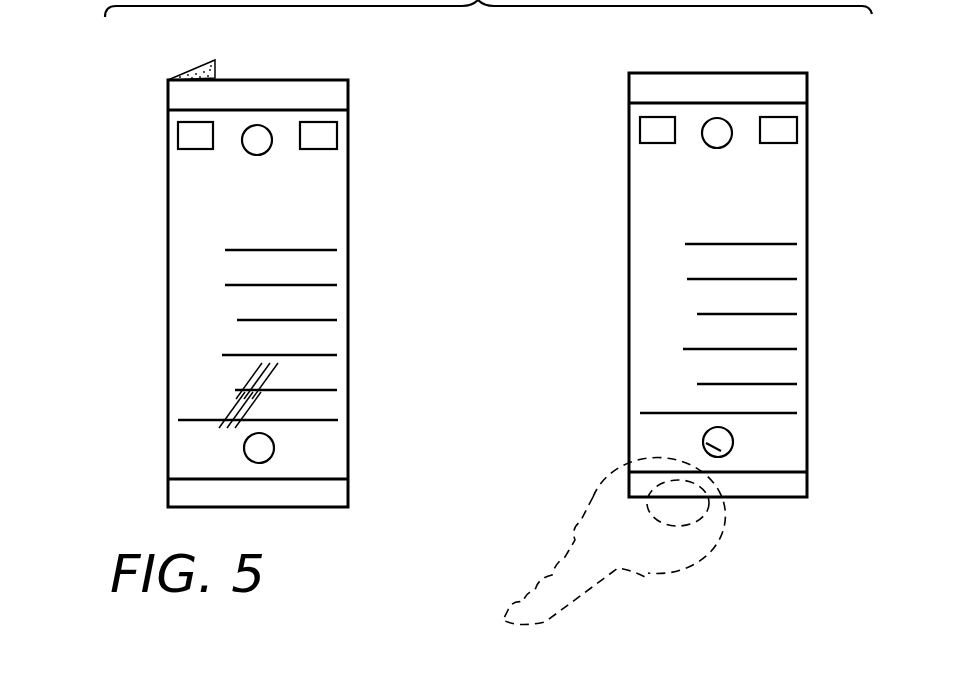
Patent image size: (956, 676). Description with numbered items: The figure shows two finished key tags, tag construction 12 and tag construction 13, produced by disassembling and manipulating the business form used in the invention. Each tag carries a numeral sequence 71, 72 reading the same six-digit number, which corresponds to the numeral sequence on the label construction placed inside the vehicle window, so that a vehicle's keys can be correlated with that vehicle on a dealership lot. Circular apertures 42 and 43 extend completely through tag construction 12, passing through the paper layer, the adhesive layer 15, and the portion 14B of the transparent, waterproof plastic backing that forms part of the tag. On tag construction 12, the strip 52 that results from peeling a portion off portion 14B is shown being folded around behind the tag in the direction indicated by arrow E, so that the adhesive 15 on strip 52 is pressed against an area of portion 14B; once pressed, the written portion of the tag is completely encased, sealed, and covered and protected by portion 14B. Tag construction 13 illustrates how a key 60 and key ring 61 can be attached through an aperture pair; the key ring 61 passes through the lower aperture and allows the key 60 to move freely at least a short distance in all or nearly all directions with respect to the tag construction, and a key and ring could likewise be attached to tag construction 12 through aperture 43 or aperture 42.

The tag construction 12 is at (374, 183).
The tag construction 13 is at (832, 200).
The portion of backing 14B is at (337, 234).
The adhesive layer 15 is at (198, 78).
The aperture 42 is at (257, 194).
The aperture 43 is at (270, 437).
The strip 52 is at (200, 76).
The key 60 is at (590, 499).
The key ring 61 is at (729, 505).
The numeral sequence 71 is at (190, 221).
The numeral sequence 72 is at (662, 216).
The arrow E is at (208, 38).